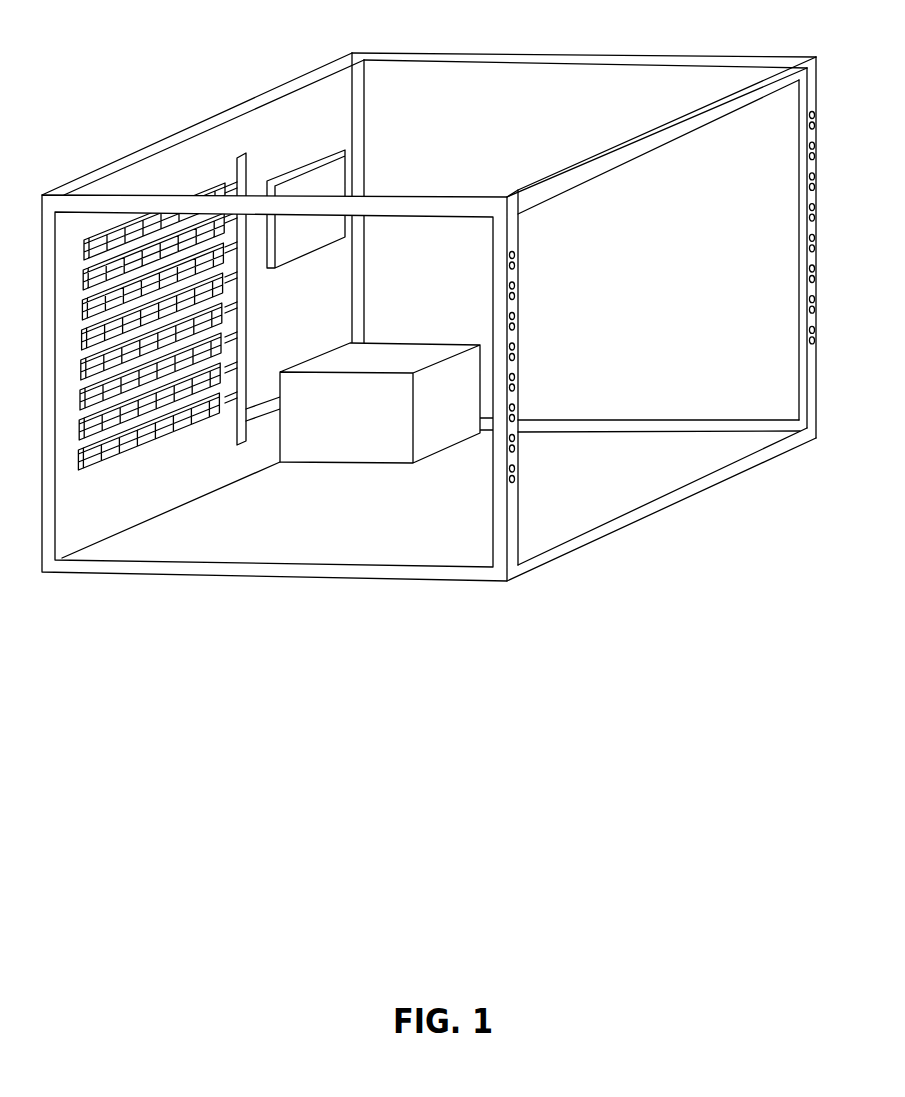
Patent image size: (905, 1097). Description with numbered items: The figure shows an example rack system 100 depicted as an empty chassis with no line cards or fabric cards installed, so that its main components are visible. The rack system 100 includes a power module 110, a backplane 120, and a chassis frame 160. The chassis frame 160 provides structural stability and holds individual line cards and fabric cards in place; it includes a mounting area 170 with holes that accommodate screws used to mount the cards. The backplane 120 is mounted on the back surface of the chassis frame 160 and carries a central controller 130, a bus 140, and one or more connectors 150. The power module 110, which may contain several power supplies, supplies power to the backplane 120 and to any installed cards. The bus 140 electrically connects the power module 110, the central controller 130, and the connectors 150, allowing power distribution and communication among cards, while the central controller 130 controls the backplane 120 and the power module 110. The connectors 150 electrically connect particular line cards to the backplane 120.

The rack system 100 is at (180, 44).
The power module 110 is at (410, 330).
The backplane 120 is at (257, 86).
The central controller 130 is at (308, 148).
The bus 140 is at (262, 295).
The connectors 150 is at (213, 170).
The chassis frame 160 is at (465, 183).
The mounting area 170 is at (537, 257).